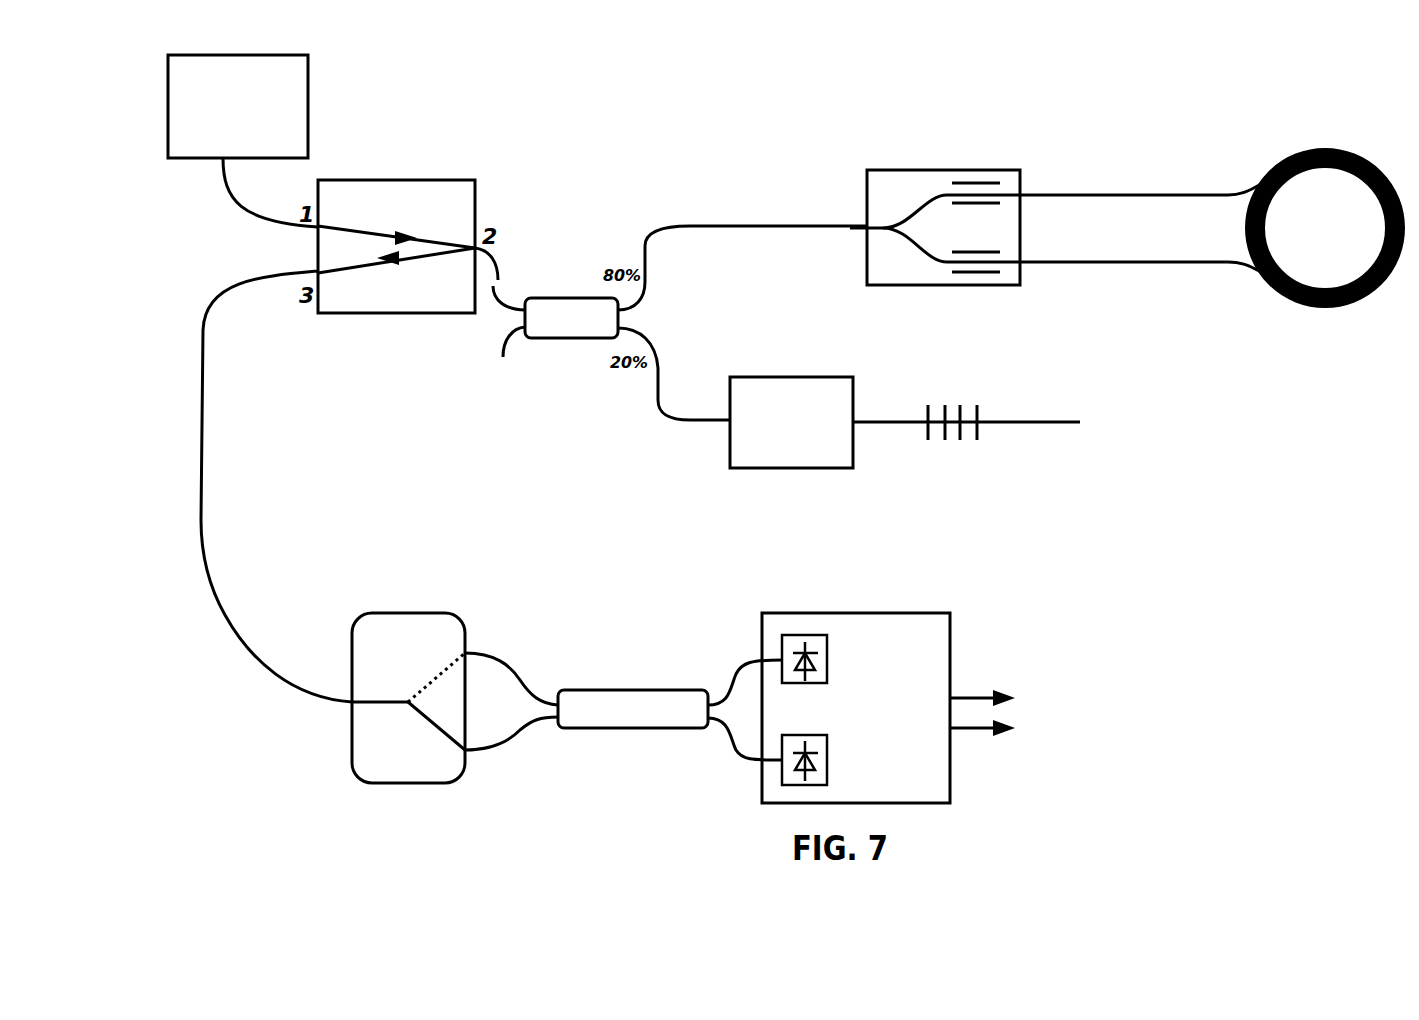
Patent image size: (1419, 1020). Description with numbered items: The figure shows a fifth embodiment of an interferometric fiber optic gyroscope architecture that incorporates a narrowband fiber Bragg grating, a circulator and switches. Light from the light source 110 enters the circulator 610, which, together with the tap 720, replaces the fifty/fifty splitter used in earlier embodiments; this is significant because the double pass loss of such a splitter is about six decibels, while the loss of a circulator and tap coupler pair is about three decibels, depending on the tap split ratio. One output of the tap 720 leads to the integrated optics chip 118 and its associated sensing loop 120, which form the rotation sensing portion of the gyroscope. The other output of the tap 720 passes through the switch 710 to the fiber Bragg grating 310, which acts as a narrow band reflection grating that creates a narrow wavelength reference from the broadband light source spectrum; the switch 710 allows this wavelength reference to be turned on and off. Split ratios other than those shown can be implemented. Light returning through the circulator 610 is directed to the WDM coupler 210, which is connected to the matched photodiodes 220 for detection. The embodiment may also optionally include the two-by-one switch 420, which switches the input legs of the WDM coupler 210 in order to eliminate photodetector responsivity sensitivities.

The light source 110 is at (310, 112).
The circulator 610 is at (412, 178).
The tap 720 is at (578, 297).
The switch 710 is at (777, 377).
The integrated optics chip (IOC) 118 is at (992, 170).
The sensing loop 120 is at (1285, 157).
The fiber Bragg grating (FBG) 310 is at (977, 413).
The 2×1 switch 420 is at (465, 623).
The WDM coupler 210 is at (610, 690).
The matched photodiodes 220 is at (953, 655).